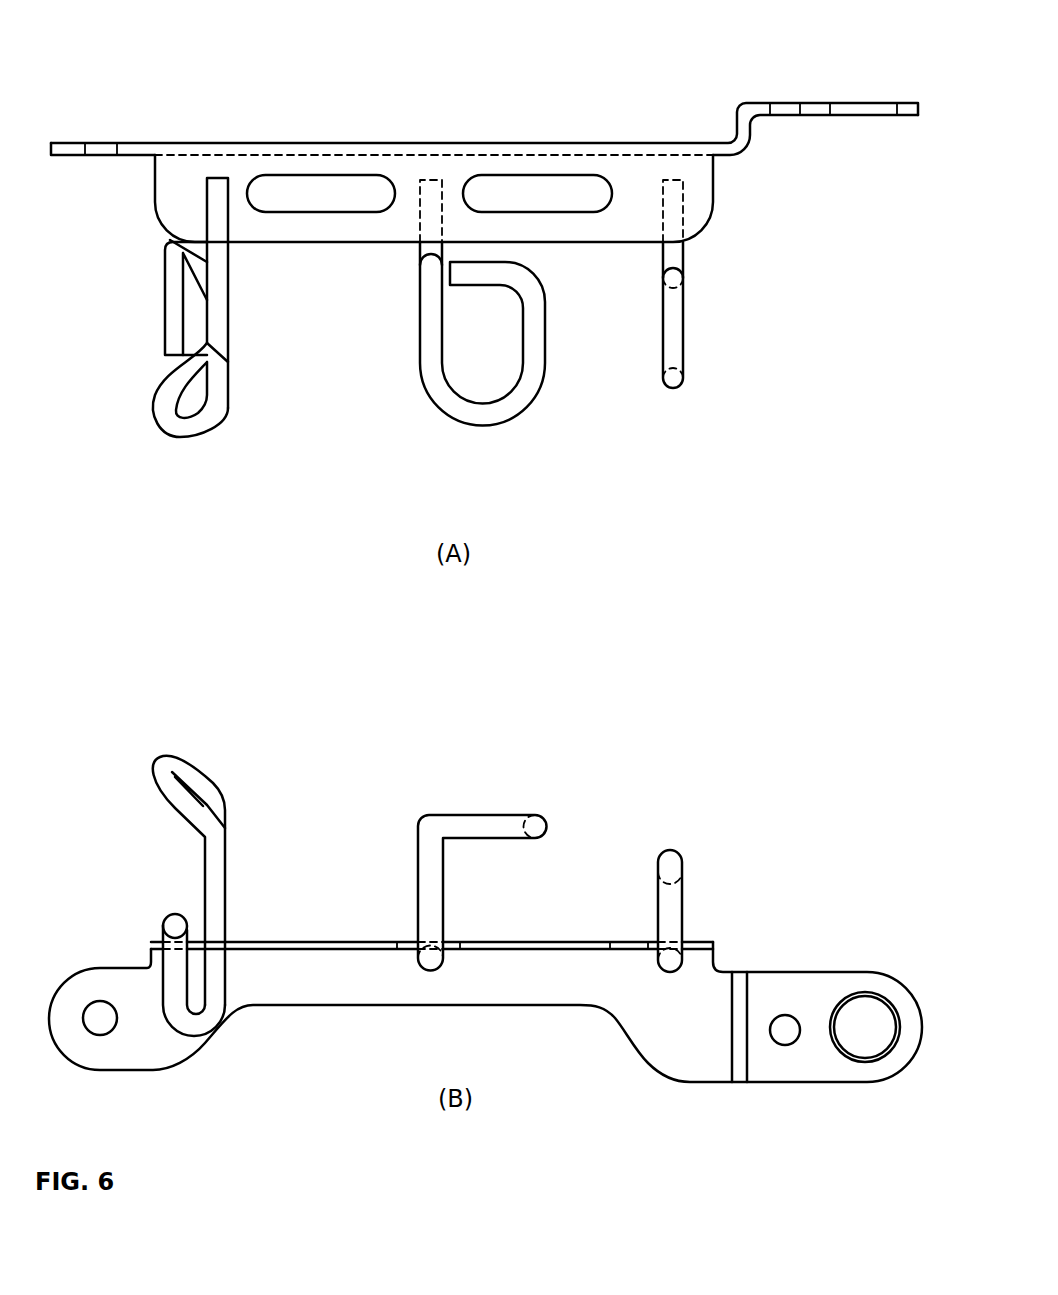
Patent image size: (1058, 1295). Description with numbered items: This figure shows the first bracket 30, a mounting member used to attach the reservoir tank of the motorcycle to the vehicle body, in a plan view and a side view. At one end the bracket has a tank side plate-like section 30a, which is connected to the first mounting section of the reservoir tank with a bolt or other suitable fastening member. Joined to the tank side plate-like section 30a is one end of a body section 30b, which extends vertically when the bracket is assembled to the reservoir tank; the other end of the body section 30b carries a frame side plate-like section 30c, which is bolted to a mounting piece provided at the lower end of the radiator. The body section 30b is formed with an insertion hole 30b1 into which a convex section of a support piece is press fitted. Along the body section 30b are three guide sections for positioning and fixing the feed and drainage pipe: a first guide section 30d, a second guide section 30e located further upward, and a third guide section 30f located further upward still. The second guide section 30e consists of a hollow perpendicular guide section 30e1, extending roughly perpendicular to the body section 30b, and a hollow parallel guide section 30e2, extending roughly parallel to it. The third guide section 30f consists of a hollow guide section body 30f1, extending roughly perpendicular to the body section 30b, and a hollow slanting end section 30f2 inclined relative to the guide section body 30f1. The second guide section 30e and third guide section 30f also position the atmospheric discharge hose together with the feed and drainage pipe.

The first bracket 30 is at (505, 104).
The tank side plate-like section 30a is at (812, 103).
The body section 30b is at (648, 143).
The insertion hole 30b1 is at (573, 213).
The frame side plate-like section 30c is at (88, 143).
The first guide section 30d is at (675, 392).
The second guide section 30e is at (505, 424).
The perpendicular guide section 30e1 is at (443, 880).
The parallel guide section 30e2 is at (535, 368).
The third guide section 30f is at (229, 360).
The guide section body 30f1 is at (230, 291).
The slanting end section 30f2 is at (198, 432).